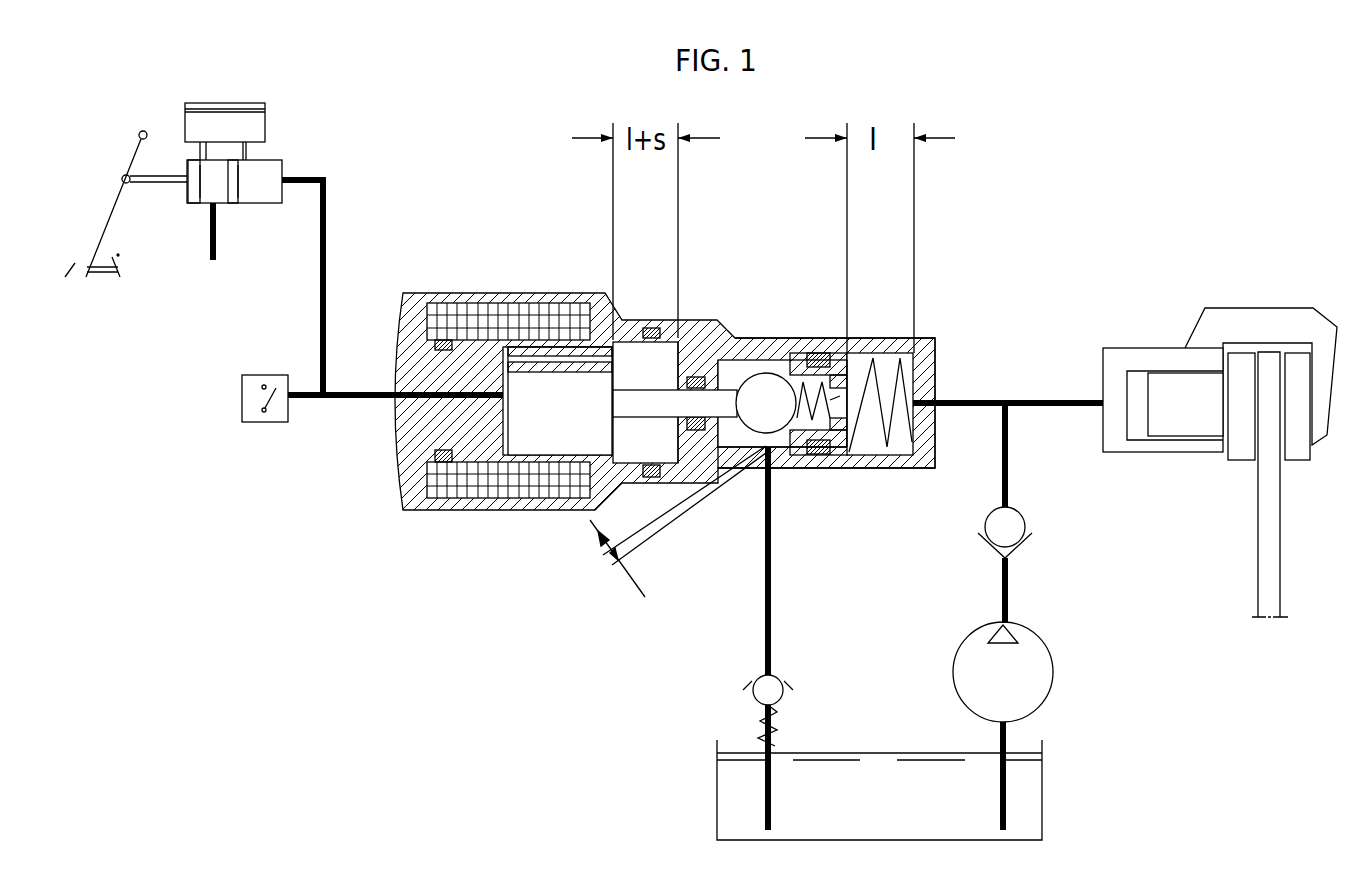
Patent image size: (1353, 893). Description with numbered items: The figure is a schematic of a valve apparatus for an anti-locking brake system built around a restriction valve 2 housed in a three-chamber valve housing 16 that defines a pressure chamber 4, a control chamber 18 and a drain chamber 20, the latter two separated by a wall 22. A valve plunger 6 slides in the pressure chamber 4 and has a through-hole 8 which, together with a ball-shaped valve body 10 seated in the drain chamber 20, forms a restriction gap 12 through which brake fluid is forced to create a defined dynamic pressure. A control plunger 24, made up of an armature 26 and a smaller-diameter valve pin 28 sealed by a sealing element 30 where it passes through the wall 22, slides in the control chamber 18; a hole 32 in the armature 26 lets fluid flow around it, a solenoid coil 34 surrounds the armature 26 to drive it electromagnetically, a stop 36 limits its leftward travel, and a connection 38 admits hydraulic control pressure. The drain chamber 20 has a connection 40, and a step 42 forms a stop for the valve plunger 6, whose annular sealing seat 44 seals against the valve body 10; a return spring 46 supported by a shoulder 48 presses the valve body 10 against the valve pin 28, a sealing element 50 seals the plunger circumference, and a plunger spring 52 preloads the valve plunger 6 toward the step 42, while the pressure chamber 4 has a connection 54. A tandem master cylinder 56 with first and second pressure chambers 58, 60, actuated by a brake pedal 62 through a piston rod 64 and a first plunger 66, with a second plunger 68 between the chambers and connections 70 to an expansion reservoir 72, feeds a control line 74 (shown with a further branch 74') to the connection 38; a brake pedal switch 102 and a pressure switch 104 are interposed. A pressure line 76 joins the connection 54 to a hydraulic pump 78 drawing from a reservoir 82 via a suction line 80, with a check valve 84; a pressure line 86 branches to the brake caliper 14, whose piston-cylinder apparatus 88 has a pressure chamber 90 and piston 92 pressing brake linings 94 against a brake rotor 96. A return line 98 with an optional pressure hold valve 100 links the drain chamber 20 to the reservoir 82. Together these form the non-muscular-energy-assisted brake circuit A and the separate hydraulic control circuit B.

The restriction valve 2 is at (752, 262).
The pressure chamber 4 is at (890, 360).
The valve plunger 6 is at (842, 428).
The through-hole 8 is at (833, 405).
The valve body 10 is at (779, 418).
The restriction gap 12 is at (612, 562).
The brake caliper 14 is at (1290, 303).
The valve housing 16 is at (405, 478).
The control chamber 18 is at (638, 440).
The drain chamber 20 is at (738, 363).
The wall 22 is at (688, 440).
The control plunger 24 is at (550, 343).
The armature 26 is at (570, 430).
The valve pin 28 is at (629, 348).
The sealing element 30 is at (693, 378).
The hole 32 is at (523, 360).
The solenoid coil 34 is at (475, 482).
The stop 36 is at (505, 408).
The connection 38 is at (415, 403).
The connection 40 is at (764, 452).
The step 42 is at (802, 385).
The sealing seat 44 is at (787, 440).
The return spring 46 is at (843, 378).
The shoulder 48 is at (845, 418).
The sealing element 50 is at (818, 353).
The plunger spring 52 is at (905, 412).
The connection 54 is at (923, 398).
The master cylinder 56 is at (291, 167).
The first pressure chamber 58 is at (210, 175).
The second pressure chamber 60 is at (263, 178).
The brake pedal 62 is at (110, 212).
The piston rod 64 is at (155, 184).
The first plunger 66 is at (193, 187).
The second plunger 68 is at (235, 188).
The connections 70 is at (203, 150).
The expansion reservoir 72 is at (233, 125).
The control line 74 is at (296, 287).
The brake line 74' is at (189, 241).
The pressure line 76 is at (1003, 445).
The hydraulic pump 78 is at (1043, 668).
The suction line 80 is at (1005, 735).
The reservoir 82 is at (1027, 797).
The check valve 84 is at (1029, 520).
The pressure line 86 is at (1040, 400).
The piston-cylinder apparatus 88 is at (1197, 368).
The pressure chamber 90 is at (1138, 420).
The piston 92 is at (1203, 418).
The brake linings 94 is at (1245, 440).
The brake rotor 96 is at (1275, 563).
The return line 98 is at (770, 645).
The pressure hold valve 100 is at (748, 693).
The brake pedal switch 102 is at (122, 273).
The pressure switch 104 is at (242, 397).
The non-muscular-energy-assisted brake circuit A is at (1005, 368).
The hydraulic control circuit B is at (288, 311).